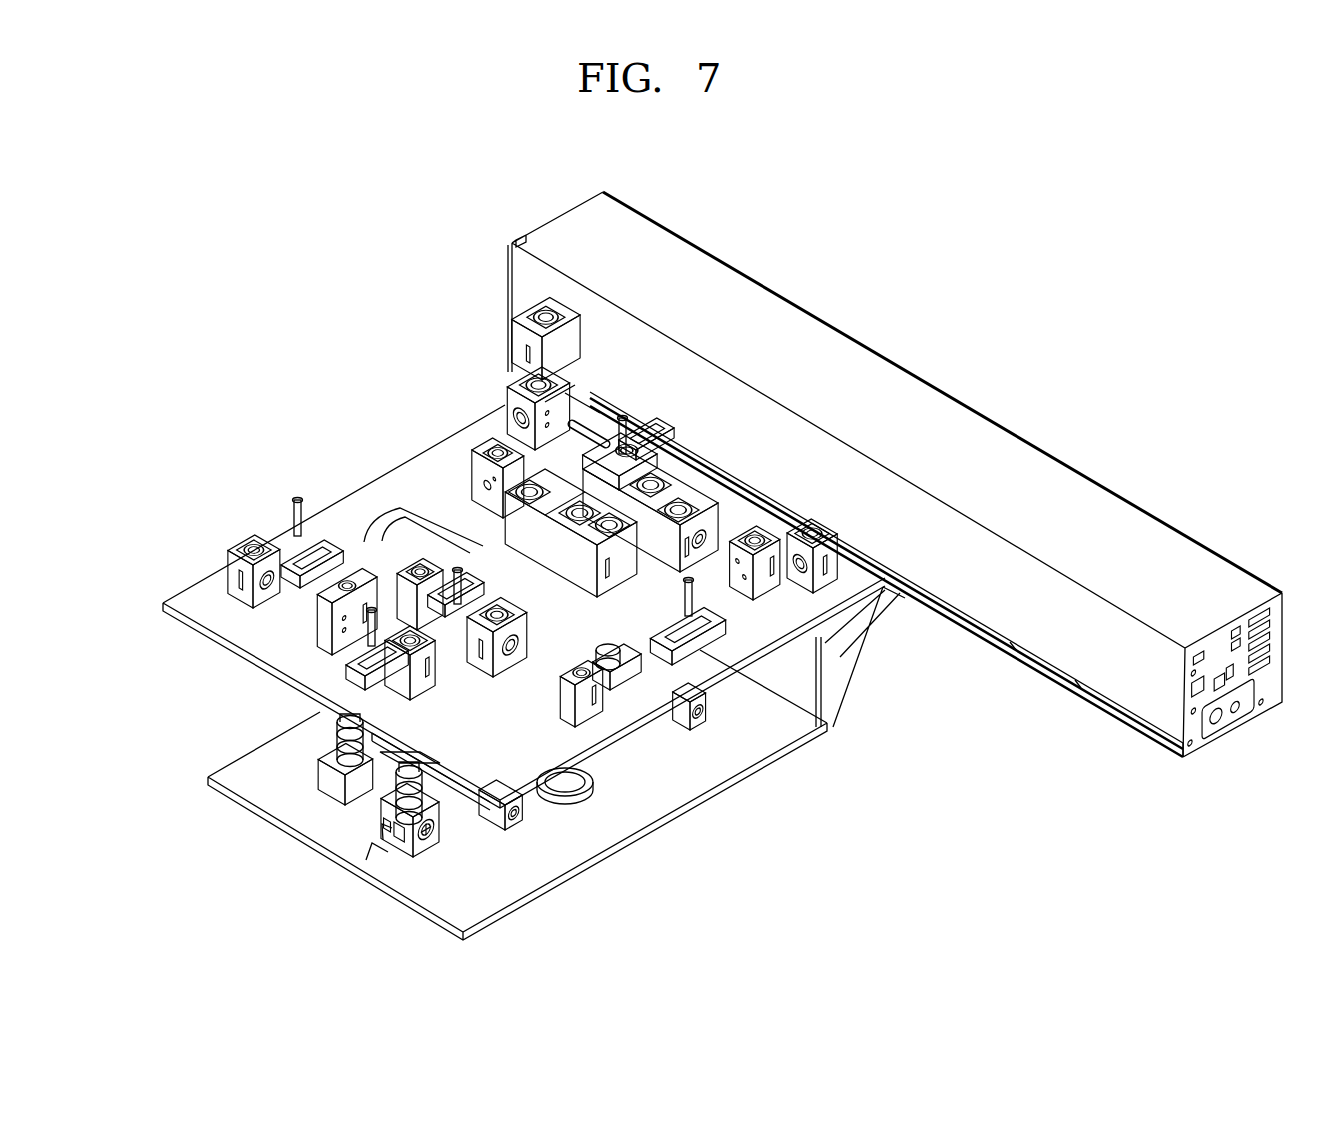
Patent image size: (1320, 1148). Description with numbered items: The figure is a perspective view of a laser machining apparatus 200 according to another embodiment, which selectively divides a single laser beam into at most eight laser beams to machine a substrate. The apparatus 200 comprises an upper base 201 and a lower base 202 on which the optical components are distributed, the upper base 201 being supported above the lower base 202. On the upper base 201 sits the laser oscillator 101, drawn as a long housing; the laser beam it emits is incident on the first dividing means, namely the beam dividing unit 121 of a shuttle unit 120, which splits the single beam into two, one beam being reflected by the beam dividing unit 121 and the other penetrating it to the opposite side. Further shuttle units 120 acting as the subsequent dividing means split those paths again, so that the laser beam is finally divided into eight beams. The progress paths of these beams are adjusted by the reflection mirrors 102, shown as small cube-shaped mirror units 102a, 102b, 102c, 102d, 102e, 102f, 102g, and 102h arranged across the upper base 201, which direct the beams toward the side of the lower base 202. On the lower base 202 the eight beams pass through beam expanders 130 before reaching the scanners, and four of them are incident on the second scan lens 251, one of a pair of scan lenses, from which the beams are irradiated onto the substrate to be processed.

The laser machining apparatus 200 is at (250, 286).
The upper base 201 is at (210, 600).
The lower base 202 is at (275, 765).
The laser oscillator 101 is at (655, 245).
The reflection mirror 102 is at (518, 325).
The reflection mirror 102a is at (530, 488).
The reflection mirror 102b is at (717, 507).
The reflection mirror 102c is at (405, 580).
The reflection mirror 102d is at (406, 824).
The reflection mirror 102e is at (707, 517).
The reflection mirror 102f is at (620, 435).
The reflection mirror 102g is at (562, 732).
The reflection mirror 102h is at (402, 648).
The shuttle unit 120 is at (657, 435).
The beam dividing unit 121 is at (673, 457).
The beam expander 130 is at (398, 795).
The second scan lens 251 is at (566, 785).